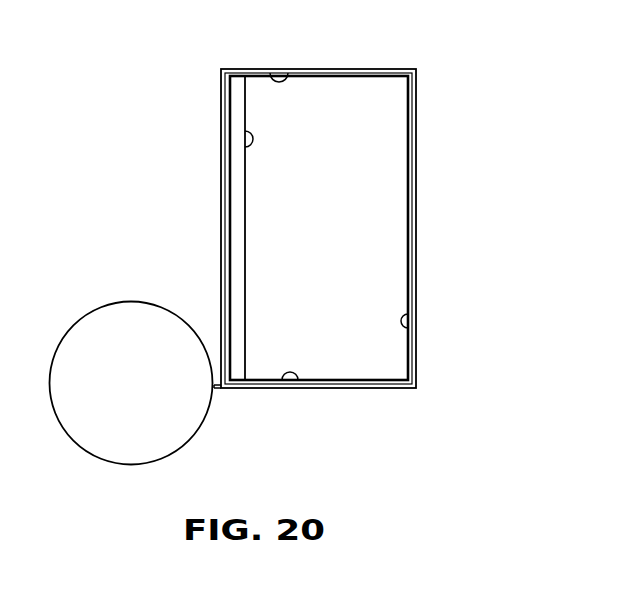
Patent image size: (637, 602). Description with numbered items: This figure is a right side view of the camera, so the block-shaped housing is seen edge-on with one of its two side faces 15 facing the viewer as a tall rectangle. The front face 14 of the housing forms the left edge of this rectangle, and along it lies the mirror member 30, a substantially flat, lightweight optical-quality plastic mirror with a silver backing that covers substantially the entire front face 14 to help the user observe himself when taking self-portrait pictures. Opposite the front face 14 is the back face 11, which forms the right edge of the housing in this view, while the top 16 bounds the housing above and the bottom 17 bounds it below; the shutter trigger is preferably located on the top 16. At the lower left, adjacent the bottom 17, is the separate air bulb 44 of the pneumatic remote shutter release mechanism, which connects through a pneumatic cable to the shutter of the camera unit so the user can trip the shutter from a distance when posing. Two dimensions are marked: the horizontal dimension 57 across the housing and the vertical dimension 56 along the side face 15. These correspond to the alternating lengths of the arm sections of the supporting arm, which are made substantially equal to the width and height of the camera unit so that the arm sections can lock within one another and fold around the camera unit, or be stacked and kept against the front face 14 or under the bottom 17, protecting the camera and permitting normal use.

The back face 11 is at (416, 327).
The front face 14 is at (245, 147).
The side face 15 is at (313, 244).
The top 16 is at (271, 73).
The bottom 17 is at (297, 382).
The mirror member 30 is at (236, 231).
The air bulb 44 is at (122, 395).
The length 56 is at (425, 71).
The length 57 is at (226, 2).